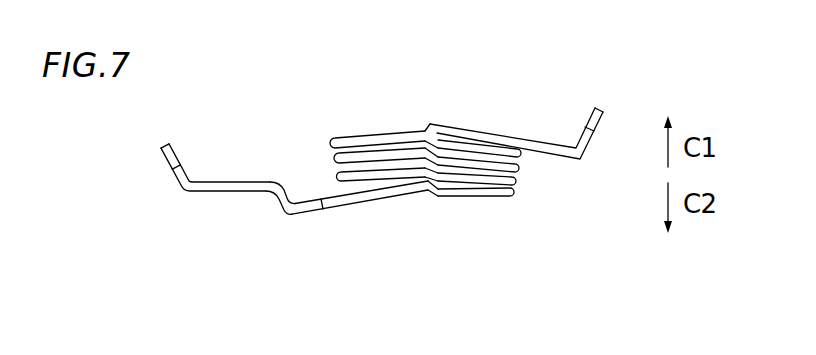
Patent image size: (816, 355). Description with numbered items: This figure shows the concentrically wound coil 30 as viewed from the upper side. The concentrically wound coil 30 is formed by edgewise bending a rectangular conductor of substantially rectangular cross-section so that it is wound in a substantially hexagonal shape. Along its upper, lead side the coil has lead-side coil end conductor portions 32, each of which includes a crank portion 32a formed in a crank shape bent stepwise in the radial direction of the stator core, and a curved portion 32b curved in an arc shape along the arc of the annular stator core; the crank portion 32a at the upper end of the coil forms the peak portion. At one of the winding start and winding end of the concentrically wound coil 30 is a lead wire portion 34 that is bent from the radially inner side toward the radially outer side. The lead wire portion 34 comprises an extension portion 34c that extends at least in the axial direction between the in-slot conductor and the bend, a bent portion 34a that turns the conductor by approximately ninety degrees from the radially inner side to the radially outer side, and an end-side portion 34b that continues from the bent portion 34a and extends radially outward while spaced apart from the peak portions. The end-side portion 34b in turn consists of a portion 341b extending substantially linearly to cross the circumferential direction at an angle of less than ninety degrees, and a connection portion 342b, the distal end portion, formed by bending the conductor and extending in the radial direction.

The concentrically wound coil 30 is at (589, 93).
The lead-side coil end conductor portion 32 is at (438, 122).
The crank portion 32a is at (438, 122).
The curved portion 32b is at (377, 132).
The lead wire portion 34 is at (294, 181).
The bent portion 34a is at (278, 208).
The end-side portion 34b is at (242, 134).
The extension portion 34c is at (323, 209).
The portion extending to cross the circumferential direction 341b is at (220, 181).
The connection portion 342b is at (170, 139).